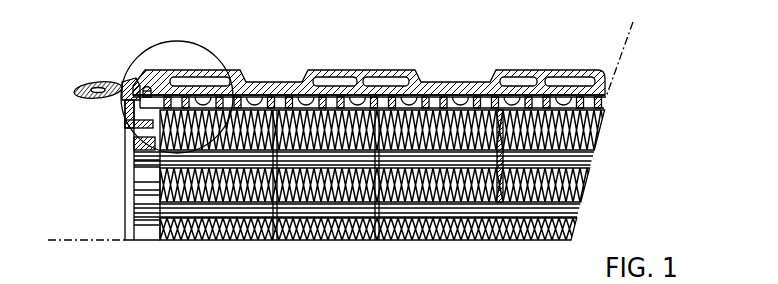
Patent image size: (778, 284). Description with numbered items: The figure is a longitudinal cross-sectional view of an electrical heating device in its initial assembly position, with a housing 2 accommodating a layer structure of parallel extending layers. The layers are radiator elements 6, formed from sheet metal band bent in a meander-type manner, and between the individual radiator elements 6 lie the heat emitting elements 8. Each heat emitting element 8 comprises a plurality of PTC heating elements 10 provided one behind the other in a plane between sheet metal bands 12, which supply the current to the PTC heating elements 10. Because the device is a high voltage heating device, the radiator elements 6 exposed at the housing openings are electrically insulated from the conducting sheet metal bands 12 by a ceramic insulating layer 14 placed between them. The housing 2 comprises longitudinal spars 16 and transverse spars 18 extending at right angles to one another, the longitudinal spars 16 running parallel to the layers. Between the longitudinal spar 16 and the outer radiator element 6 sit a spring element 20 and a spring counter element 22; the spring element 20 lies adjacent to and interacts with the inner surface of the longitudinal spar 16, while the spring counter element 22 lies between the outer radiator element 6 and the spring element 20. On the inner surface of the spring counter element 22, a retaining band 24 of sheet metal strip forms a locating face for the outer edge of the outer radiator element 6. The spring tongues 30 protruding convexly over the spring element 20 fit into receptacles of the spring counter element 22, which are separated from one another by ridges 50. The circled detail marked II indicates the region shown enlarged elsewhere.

The housing 2 is at (589, 58).
The radiator elements 6 is at (605, 128).
The heat emitting elements 8 is at (606, 157).
The PTC heating elements 10 is at (350, 212).
The sheet metal bands 12 is at (592, 167).
The ceramic insulating layer 14 is at (589, 168).
The longitudinal spars 16 is at (468, 92).
The transverse spars 18 is at (125, 192).
The spring element 20 is at (608, 96).
The spring counter element 22 is at (372, 70).
The retaining band 24 is at (291, 106).
The ridges 50 is at (255, 108).
The spring tongues 30 is at (461, 4).
The section line II is at (151, 41).